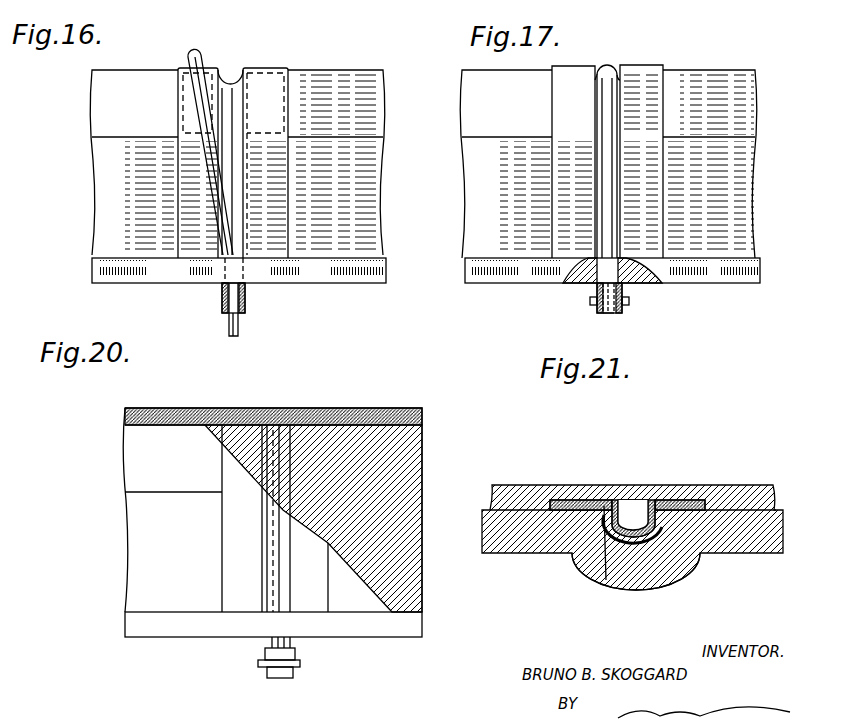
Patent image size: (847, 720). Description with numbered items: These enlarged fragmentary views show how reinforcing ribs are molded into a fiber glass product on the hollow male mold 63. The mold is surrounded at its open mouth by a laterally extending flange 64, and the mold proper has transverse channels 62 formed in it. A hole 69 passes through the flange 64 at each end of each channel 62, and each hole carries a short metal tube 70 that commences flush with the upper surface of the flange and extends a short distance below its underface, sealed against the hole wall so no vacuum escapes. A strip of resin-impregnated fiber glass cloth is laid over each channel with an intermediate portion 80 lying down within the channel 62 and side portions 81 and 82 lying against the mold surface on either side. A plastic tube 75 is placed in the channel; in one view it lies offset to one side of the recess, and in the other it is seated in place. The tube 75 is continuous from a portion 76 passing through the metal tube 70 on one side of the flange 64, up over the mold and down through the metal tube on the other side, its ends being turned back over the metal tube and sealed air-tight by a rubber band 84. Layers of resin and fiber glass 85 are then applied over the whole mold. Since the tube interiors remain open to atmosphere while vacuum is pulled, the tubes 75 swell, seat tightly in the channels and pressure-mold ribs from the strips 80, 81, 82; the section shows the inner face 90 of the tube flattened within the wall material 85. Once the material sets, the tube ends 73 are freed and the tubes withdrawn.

In FIG. 16, the transverse channel 62 is at (248, 103).
In FIG. 21, the male mold 63 is at (680, 560).
In FIG. 16, the flange 64 is at (340, 262).
In FIG. 17, the flange 64 is at (712, 268).
In FIG. 20, the flange 64 is at (352, 625).
In FIG. 16, the hole 69 is at (218, 276).
In FIG. 17, the hole 69 is at (590, 280).
In FIG. 16, the metal tube 70 is at (247, 297).
In FIG. 17, the metal tube 70 is at (625, 287).
In FIG. 20, the metal tube 70 is at (265, 645).
In FIG. 17, the tube end 73 is at (597, 312).
In FIG. 20, the tube end 73 is at (300, 663).
In FIG. 16, the tube 75 is at (196, 92).
In FIG. 17, the tube 75 is at (611, 145).
In FIG. 20, the tube 75 is at (275, 535).
In FIG. 21, the tube 75 is at (650, 503).
In FIG. 16, the tube portion 76 is at (233, 336).
In FIG. 17, the tube portion 76 is at (617, 313).
In FIG. 16, the intermediate portion 80 is at (231, 82).
In FIG. 17, the intermediate portion 80 is at (597, 73).
In FIG. 21, the intermediate portion 80 is at (605, 580).
In FIG. 16, the side portion 81 is at (183, 125).
In FIG. 17, the side portion 81 is at (565, 110).
In FIG. 20, the side portion 81 is at (228, 483).
In FIG. 21, the side portion 81 is at (580, 500).
In FIG. 16, the side portion 82 is at (270, 127).
In FIG. 17, the side portion 82 is at (650, 115).
In FIG. 21, the side portion 82 is at (700, 500).
In FIG. 17, the rubber band 84 is at (630, 303).
In FIG. 20, the rubber band 84 is at (262, 668).
In FIG. 16, the layers of resin and fiber glass 85 is at (113, 229).
In FIG. 17, the layers of resin and fiber glass 85 is at (490, 228).
In FIG. 20, the layers of resin and fiber glass 85 is at (147, 590).
In FIG. 21, the layers of resin and fiber glass 85 is at (740, 487).
In FIG. 21, the inner face 90 is at (628, 505).